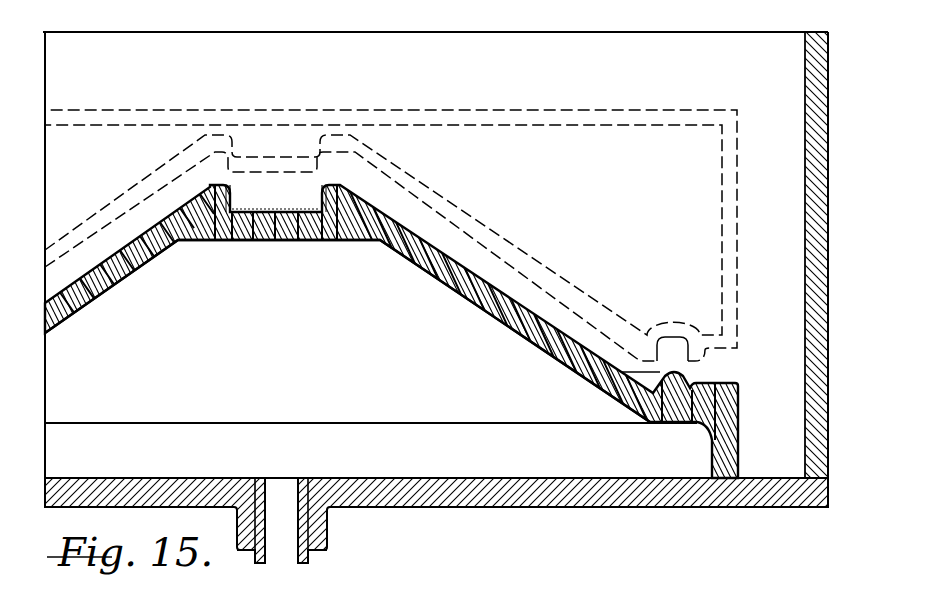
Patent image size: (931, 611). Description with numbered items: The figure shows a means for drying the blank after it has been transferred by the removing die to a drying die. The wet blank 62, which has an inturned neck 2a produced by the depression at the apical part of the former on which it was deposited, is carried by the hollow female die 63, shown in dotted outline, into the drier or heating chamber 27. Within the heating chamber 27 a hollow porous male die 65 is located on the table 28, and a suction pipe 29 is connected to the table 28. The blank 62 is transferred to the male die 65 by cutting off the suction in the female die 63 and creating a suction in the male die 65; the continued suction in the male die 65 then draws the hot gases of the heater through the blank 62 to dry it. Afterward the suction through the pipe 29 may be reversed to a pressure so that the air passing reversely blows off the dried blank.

The heating chamber 27 is at (826, 152).
The hollow female die 63 is at (740, 218).
The blank 62 is at (423, 240).
The hollow porous male die 65 is at (488, 313).
The inturned neck 2a is at (318, 203).
The table 28 is at (668, 497).
The suction pipe 29 is at (287, 553).